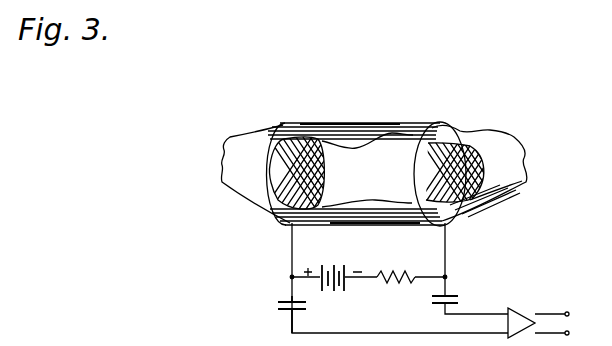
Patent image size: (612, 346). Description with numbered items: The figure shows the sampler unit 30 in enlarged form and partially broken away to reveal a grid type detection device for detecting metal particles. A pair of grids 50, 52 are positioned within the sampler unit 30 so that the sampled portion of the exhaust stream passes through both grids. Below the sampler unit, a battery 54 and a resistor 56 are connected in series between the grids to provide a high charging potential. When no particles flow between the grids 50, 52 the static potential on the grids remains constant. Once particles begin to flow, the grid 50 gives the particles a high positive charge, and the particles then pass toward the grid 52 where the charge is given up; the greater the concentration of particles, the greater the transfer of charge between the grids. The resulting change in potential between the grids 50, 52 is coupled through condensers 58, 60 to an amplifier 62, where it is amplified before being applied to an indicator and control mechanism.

The sampler unit 30 is at (383, 112).
The grid 50 is at (312, 138).
The grid 52 is at (448, 128).
The battery 54 is at (336, 264).
The resistor 56 is at (402, 270).
The condenser 58 is at (276, 307).
The condenser 60 is at (460, 299).
The amplifier 62 is at (516, 308).